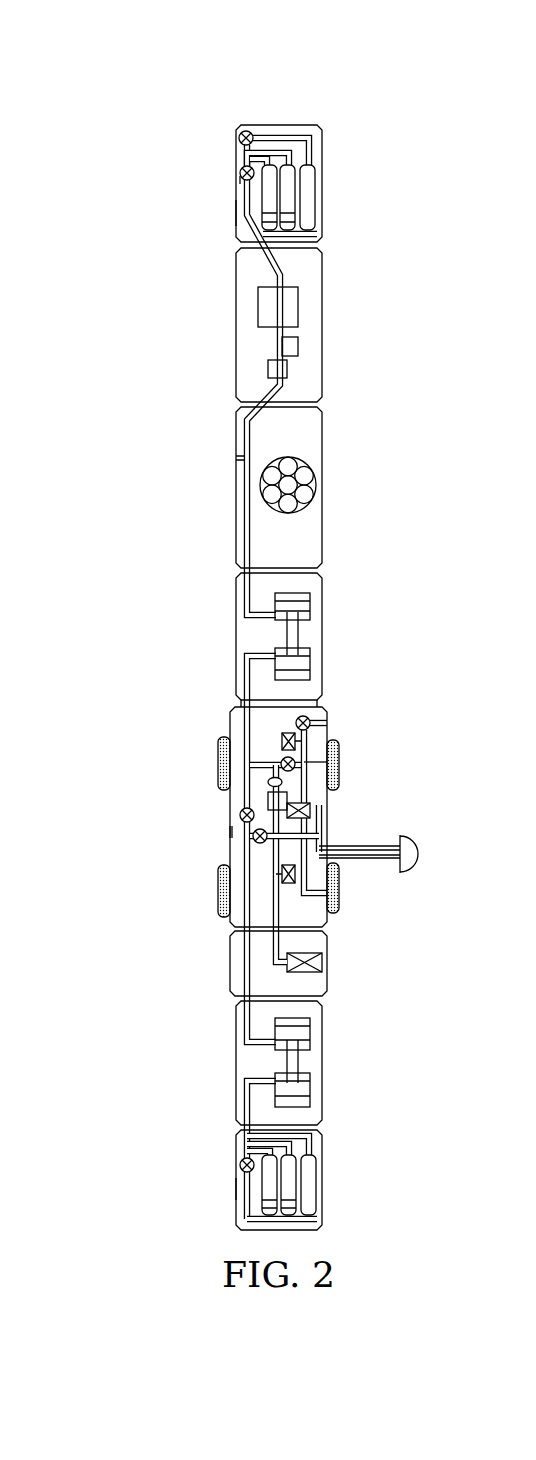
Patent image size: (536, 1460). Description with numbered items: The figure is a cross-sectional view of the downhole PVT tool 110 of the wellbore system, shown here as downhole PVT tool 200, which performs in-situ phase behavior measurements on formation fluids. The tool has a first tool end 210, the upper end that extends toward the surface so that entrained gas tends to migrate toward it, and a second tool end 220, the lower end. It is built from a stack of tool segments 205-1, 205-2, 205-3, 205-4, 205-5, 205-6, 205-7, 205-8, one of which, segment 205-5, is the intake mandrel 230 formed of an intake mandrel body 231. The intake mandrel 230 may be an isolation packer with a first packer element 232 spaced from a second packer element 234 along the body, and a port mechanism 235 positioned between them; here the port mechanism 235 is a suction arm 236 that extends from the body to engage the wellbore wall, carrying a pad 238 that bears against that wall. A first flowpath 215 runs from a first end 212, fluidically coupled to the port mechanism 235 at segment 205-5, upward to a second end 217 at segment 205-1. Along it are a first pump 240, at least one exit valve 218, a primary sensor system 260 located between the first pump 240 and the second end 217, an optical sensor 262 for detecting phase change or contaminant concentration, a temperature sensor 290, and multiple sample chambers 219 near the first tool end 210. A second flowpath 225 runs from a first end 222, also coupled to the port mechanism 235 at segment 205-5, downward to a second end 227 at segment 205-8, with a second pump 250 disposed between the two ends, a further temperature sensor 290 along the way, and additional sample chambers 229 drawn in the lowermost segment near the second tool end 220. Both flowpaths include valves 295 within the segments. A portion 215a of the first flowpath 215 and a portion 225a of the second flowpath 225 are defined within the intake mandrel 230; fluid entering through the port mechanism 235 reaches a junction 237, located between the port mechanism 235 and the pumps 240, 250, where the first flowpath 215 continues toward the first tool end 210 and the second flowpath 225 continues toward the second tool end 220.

The downhole PVT tool 200 is at (206, 80).
The downhole PVT tool 110 is at (135, 446).
The first tool end 210 is at (338, 148).
The tool segment 205-1 is at (297, 194).
The tool segment 205-2 is at (261, 325).
The tool segment 205-3 is at (336, 487).
The tool segment 205-4 is at (298, 636).
The tool segment 205-5 is at (300, 831).
The tool segment 205-6 is at (226, 950).
The tool segment 205-7 is at (298, 1063).
The tool segment 205-8 is at (295, 1182).
The valve 295 is at (243, 132).
The second end 217 is at (234, 210).
The exit valve 218 is at (240, 178).
The sample chamber 219 is at (290, 188).
The first flowpath 215 is at (262, 262).
The portion of first flowpath 215a is at (244, 727).
The primary sensor system 260 is at (299, 305).
The temperature sensor 290 is at (299, 345).
The optical sensor 262 is at (292, 488).
The first pump 240 is at (262, 637).
The first end 212 is at (242, 702).
The intake mandrel 230 is at (127, 718).
The first packer element 232 is at (219, 768).
The second packer element 234 is at (219, 890).
The intake mandrel body 231 is at (333, 920).
The first end 222 is at (245, 836).
The junction 237 is at (230, 830).
The port mechanism 235 is at (428, 828).
The suction arm 236 is at (368, 846).
The pad 238 is at (410, 866).
The portion of second flowpath 225a is at (243, 905).
The second flowpath 225 is at (243, 972).
The second tool end 220 is at (218, 1214).
The second pump 250 is at (262, 1060).
The second end 227 is at (234, 1184).
The lower fluid reservoir 229 is at (290, 1178).